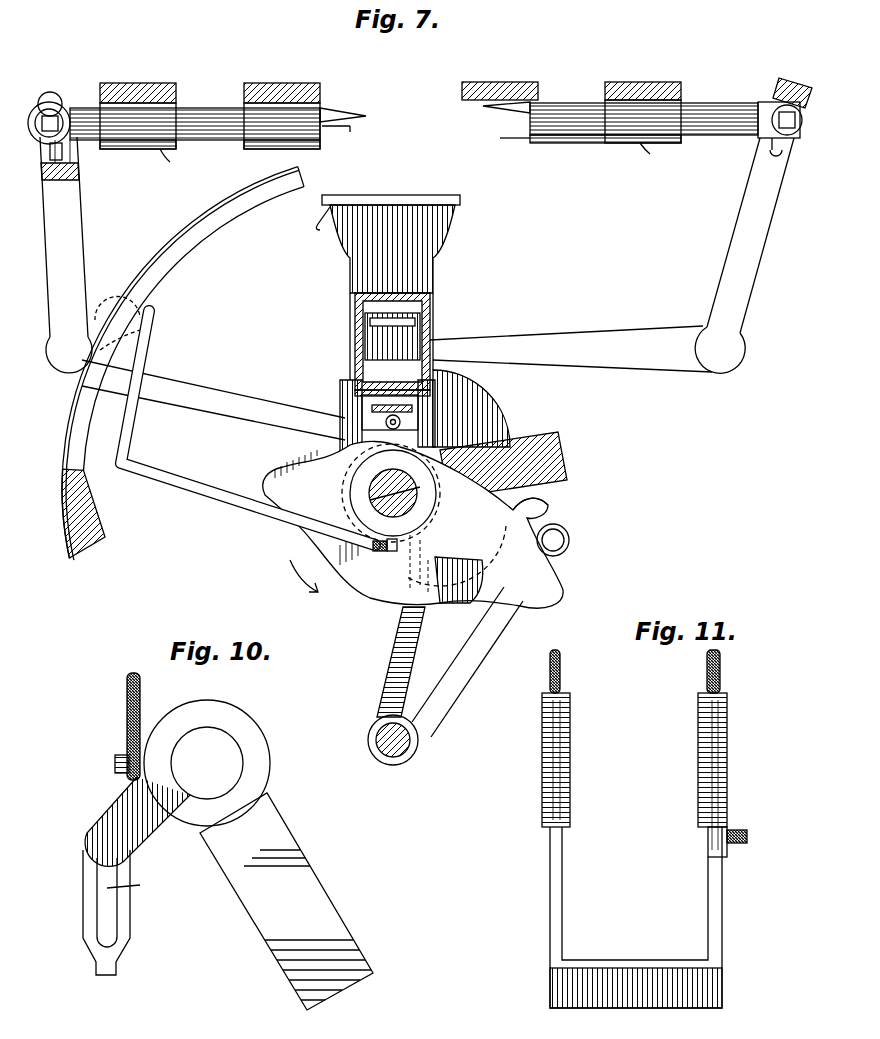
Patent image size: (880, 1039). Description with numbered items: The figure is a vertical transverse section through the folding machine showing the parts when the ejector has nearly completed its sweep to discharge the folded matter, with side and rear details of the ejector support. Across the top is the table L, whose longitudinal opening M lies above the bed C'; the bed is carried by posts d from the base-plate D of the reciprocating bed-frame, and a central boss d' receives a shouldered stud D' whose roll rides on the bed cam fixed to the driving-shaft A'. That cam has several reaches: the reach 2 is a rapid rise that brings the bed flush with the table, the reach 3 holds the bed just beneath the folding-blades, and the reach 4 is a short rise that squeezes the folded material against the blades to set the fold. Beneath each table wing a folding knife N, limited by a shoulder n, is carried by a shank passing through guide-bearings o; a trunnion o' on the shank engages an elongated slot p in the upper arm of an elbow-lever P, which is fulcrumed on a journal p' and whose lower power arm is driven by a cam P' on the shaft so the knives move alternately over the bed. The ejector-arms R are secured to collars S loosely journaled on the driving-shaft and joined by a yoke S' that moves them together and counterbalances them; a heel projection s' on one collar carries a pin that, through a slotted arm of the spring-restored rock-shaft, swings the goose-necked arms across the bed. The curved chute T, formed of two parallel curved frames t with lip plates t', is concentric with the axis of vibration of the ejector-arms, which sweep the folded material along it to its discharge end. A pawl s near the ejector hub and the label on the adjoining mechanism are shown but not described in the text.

In FIG. 7, the longitudinal opening M is at (245, 104).
In FIG. 7, the folding knife N is at (340, 118).
In FIG. 7, the shoulder n is at (426, 137).
In FIG. 7, the table L is at (390, 104).
In FIG. 7, the trunnion o' is at (423, 119).
In FIG. 7, the elongated slot p is at (416, 159).
In FIG. 7, the guide-bearing o is at (405, 157).
In FIG. 7, the elbow-lever P is at (417, 255).
In FIG. 7, the journal p' is at (369, 483).
In FIG. 7, the curved chute T is at (172, 277).
In FIG. 7, the curved frame t is at (182, 365).
In FIG. 7, the plate t' is at (194, 329).
In FIG. 7, the bed C' is at (391, 311).
In FIG. 7, the post d is at (405, 317).
In FIG. 7, the boss d' is at (417, 337).
In FIG. 7, the shouldered stud D' is at (416, 336).
In FIG. 7, the base-plate D is at (471, 406).
In FIG. 7, the cam P' is at (521, 418).
In FIG. 7, the yoke S' is at (524, 465).
In FIG. 10, the yoke S' is at (286, 901).
In FIG. 11, the yoke S' is at (636, 917).
In FIG. 7, the driving-shaft A' is at (413, 524).
In FIG. 7, the fourth reach 4 is at (262, 482).
In FIG. 7, the second reach 2 is at (548, 512).
In FIG. 7, the ejector-arm R is at (190, 488).
In FIG. 10, the ejector-arm R is at (127, 700).
In FIG. 11, the ejector-arm R is at (560, 670).
In FIG. 7, the pawl s is at (371, 560).
In FIG. 10, the pawl s is at (111, 755).
In FIG. 7, the heel projection s' is at (338, 547).
In FIG. 10, the heel projection s' is at (137, 821).
In FIG. 7, the third reach 3 is at (377, 604).
In FIG. 7, the collar S is at (391, 662).
In FIG. 10, the collar S is at (220, 763).
In FIG. 11, the collar S is at (644, 775).